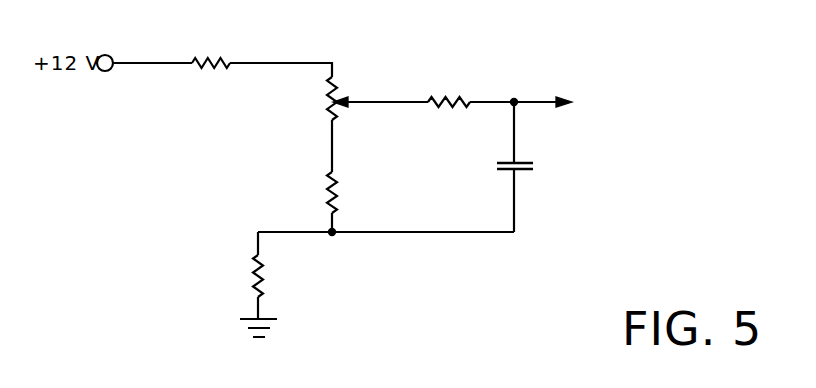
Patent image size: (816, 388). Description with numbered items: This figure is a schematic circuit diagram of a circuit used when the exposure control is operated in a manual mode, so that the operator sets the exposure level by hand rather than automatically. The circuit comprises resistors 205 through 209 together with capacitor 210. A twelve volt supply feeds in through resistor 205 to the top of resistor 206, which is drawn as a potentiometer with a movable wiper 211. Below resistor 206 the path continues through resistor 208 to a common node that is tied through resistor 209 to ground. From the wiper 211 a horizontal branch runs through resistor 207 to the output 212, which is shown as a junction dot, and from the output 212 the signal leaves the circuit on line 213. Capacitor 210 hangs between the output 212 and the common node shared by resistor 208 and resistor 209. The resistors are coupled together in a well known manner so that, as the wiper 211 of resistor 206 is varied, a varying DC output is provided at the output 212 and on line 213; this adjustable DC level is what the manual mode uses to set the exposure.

The resistor 205 is at (208, 56).
The resistor 206 is at (328, 101).
The resistor 207 is at (443, 93).
The resistor 208 is at (342, 200).
The resistor 209 is at (262, 270).
The capacitor 210 is at (520, 173).
The wiper 211 is at (341, 99).
The output 212 is at (515, 93).
The line 213 is at (538, 105).